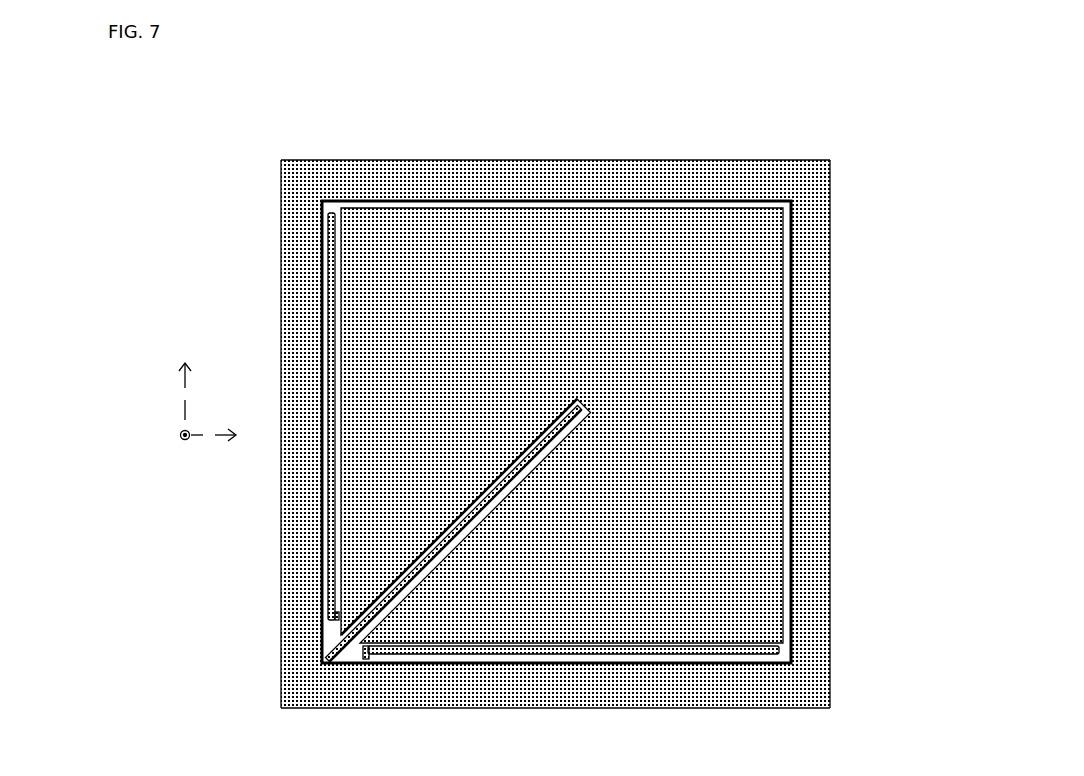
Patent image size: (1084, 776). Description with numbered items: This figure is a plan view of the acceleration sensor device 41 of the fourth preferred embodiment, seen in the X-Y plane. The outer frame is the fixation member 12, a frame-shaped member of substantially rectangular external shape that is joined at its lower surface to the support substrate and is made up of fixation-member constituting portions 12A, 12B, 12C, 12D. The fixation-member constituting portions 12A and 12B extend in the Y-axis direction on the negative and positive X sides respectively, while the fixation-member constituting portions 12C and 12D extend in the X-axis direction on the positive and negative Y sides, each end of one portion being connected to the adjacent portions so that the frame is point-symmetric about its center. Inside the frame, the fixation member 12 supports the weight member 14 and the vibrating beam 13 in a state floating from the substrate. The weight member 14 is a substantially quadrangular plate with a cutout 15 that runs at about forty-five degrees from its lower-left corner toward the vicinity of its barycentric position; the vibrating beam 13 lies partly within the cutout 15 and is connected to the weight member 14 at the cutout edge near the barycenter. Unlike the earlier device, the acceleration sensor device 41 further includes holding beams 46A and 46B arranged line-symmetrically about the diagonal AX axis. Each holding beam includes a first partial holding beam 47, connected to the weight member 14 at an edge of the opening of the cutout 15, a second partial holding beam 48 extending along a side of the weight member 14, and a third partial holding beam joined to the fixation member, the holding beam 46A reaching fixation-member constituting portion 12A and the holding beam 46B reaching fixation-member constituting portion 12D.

The acceleration sensor device 41 is at (851, 100).
The fixation member 12 is at (550, 426).
The fixation-member constituting portion 12A is at (273, 262).
The fixation-member constituting portion 12B is at (822, 272).
The fixation-member constituting portion 12C is at (690, 151).
The fixation-member constituting portion 12D is at (686, 701).
The vibrating beam 13 is at (321, 645).
The weight member 14 is at (567, 613).
The cutout 15 is at (345, 626).
The holding beam 46A is at (319, 523).
The holding beam 46B is at (447, 650).
The first partial holding beam 47 is at (329, 607).
The second partial holding beam 48 is at (491, 490).